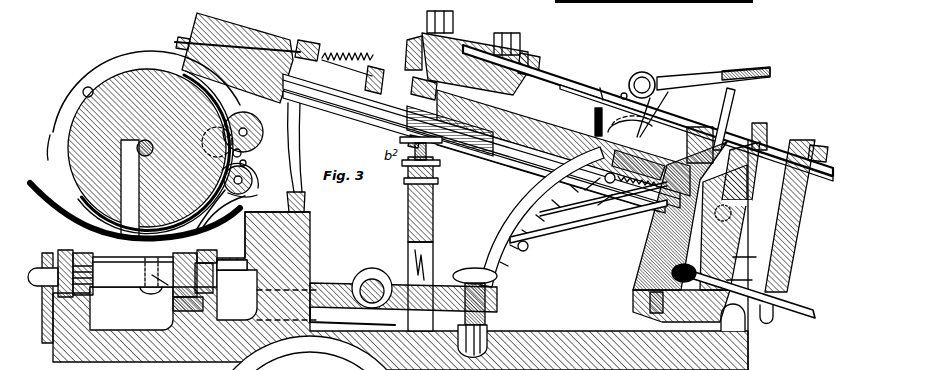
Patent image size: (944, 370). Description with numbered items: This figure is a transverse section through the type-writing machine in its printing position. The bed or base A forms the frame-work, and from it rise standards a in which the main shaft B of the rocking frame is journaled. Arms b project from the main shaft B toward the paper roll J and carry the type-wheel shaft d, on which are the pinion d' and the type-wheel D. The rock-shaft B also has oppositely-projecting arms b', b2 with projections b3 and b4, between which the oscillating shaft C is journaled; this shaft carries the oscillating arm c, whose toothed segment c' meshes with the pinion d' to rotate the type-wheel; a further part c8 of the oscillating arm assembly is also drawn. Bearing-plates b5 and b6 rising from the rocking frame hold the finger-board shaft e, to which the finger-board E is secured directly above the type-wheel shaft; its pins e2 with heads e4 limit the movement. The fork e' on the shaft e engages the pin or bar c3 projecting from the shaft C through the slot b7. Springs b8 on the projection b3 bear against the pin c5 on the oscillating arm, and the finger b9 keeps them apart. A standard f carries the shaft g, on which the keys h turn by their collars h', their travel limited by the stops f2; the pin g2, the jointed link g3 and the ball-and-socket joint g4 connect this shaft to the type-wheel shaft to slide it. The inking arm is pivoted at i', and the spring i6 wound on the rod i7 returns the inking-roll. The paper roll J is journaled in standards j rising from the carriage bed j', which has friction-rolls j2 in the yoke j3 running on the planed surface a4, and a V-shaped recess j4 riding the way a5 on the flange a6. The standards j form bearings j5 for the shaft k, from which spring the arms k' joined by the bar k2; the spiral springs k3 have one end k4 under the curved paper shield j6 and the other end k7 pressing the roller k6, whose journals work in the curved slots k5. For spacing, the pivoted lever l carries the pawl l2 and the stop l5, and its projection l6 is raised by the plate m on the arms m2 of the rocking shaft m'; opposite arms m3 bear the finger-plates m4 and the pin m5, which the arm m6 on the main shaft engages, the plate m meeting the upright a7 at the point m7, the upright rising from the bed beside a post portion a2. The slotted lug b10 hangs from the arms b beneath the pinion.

The bed or base A is at (400, 291).
The paper roll J is at (135, 154).
The arms of the paper-holding frame k' is at (143, 100).
The bar k2 is at (88, 87).
The roller k6 is at (263, 124).
The bearings j5 is at (239, 162).
The curved slots k5 is at (257, 148).
The spring end k7 is at (247, 161).
The shaft k is at (249, 178).
The spiral springs k3 is at (249, 202).
The spring end k4 is at (220, 211).
The type-wheel D is at (237, 57).
The pivot i' is at (249, 44).
The spring i6 is at (347, 53).
The rod i7 is at (367, 64).
The type-wheel shaft d is at (481, 141).
The arms b is at (474, 152).
The oscillating arm c is at (563, 151).
The collar c8 is at (450, 129).
The toothed segment c' is at (416, 88).
The slotted lug b10 is at (418, 142).
The finger-board shaft e is at (648, 113).
The finger-board E is at (475, 59).
The pins e2 is at (410, 52).
The head or finger piece e4 is at (473, 27).
The bearing-plate b6 is at (538, 60).
The pin c5 is at (608, 83).
The finger b9 is at (624, 88).
The springs b8 is at (595, 118).
The shaft g is at (644, 78).
The collar h' is at (660, 74).
The keys h is at (715, 84).
The standard f is at (660, 104).
The stops f2 is at (730, 116).
The projection b3 is at (727, 139).
The bearing-plate b5 is at (803, 138).
The oscillating shaft C is at (655, 250).
The main shaft B is at (726, 227).
The standards a is at (471, 199).
The arm b2 is at (752, 259).
The slot b7 is at (747, 283).
The arm b' is at (749, 171).
The fork e' is at (792, 216).
The pin or bar c3 is at (743, 302).
The projection b4 is at (648, 305).
The pin m5 is at (542, 251).
The arm m6 is at (588, 225).
The pin g2 is at (603, 203).
The arms m3 is at (517, 254).
The ball-and-socket joint g4 is at (588, 190).
The jointed link g3 is at (600, 207).
The upright a7 is at (306, 246).
The post head a2 is at (434, 220).
The bolt a' is at (427, 160).
The pinion d' is at (444, 161).
The arms m2 is at (403, 301).
The rocking shaft m' is at (372, 279).
The finger-plates m4 is at (475, 312).
The engagement point m7 is at (277, 235).
The plate m is at (232, 272).
The yoke j3 is at (60, 289).
The standards j is at (135, 267).
The bed of the carriage j' is at (133, 272).
The friction-rolls j2 is at (129, 248).
The curved paper shield or protector j6 is at (110, 257).
The V-shaped recess j4 is at (161, 276).
The projection l6 is at (212, 250).
The pivoted lever l is at (204, 260).
The pawl l2 is at (225, 297).
The stop l5 is at (200, 307).
The planed surface a4 is at (104, 304).
The projection or way a5 is at (151, 298).
The flange a6 is at (172, 320).